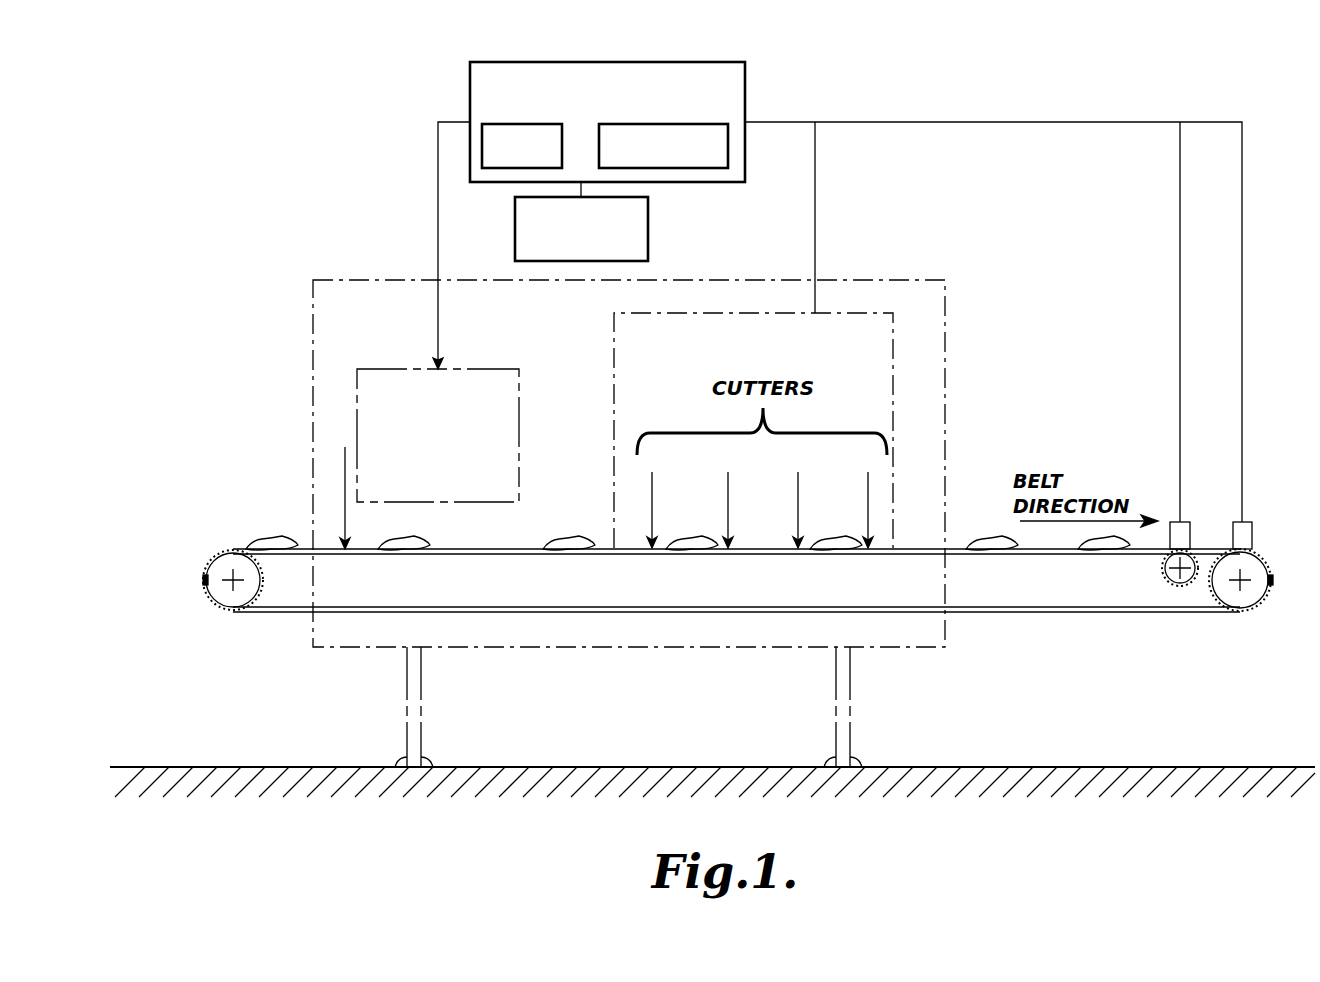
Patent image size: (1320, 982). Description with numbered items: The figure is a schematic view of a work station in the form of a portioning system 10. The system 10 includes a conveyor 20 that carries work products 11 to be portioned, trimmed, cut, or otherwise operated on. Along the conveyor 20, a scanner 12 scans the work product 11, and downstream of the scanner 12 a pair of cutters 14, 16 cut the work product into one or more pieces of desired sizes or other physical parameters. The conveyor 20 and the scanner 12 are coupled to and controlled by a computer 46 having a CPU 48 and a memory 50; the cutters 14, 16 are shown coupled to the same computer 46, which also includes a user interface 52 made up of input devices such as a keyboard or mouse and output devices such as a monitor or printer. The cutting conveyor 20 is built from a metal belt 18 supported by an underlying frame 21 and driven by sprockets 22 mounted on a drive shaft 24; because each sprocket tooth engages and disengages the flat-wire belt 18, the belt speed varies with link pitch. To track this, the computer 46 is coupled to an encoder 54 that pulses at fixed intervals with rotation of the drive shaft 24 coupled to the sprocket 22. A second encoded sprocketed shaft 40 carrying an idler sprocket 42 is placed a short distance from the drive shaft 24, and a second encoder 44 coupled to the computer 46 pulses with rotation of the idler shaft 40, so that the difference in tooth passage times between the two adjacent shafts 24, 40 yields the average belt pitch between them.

The system 10 is at (1302, 137).
The work product 11 is at (266, 540).
The scanner 12 is at (429, 459).
The cutter 14 is at (690, 507).
The cutter 16 is at (833, 507).
The metal belt 18 is at (1114, 612).
The conveyor 20 is at (997, 669).
The frame 21 is at (856, 690).
The sprocket 22 is at (1253, 592).
The drive shaft 24 is at (1248, 577).
The encoded sprocketed shaft 40 is at (1187, 585).
The idler sprocket 42 is at (1164, 555).
The encoder 44 is at (1190, 522).
The computer 46 is at (745, 72).
The CPU 48 is at (493, 124).
The memory 50 is at (728, 140).
The interface 52 is at (648, 216).
The encoder 54 is at (1252, 522).